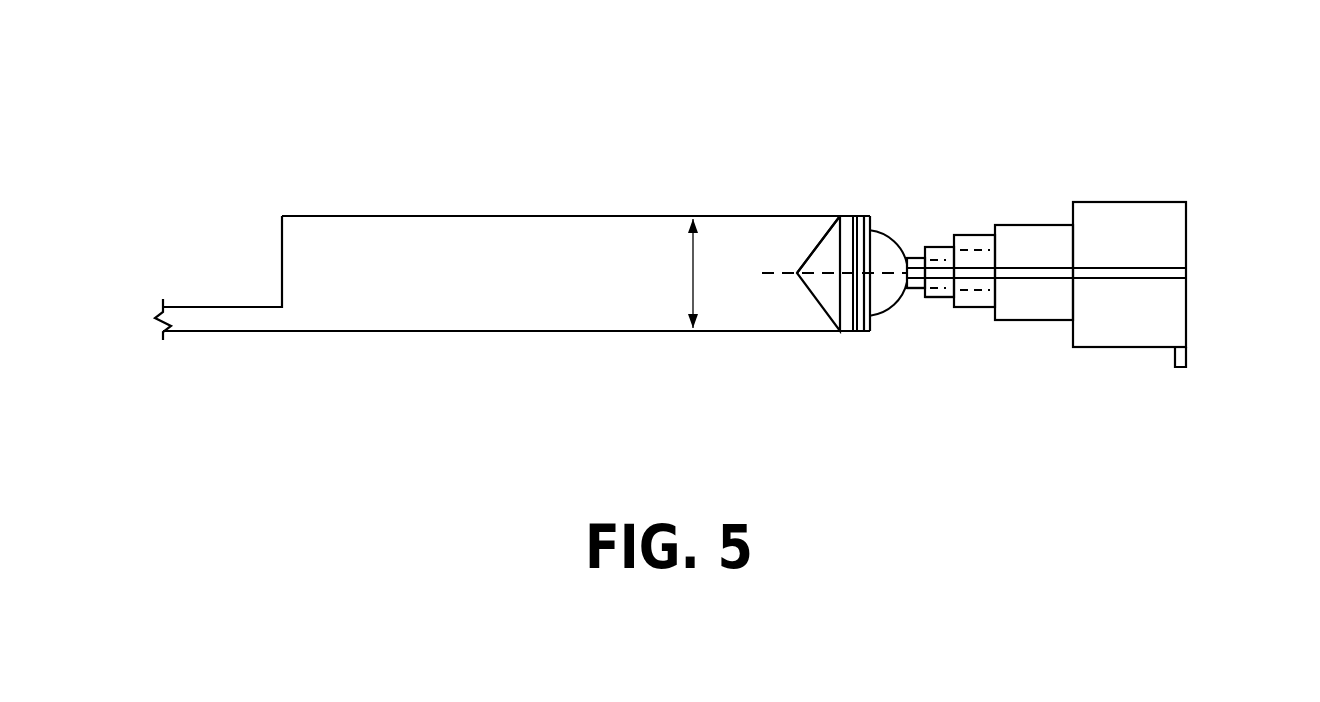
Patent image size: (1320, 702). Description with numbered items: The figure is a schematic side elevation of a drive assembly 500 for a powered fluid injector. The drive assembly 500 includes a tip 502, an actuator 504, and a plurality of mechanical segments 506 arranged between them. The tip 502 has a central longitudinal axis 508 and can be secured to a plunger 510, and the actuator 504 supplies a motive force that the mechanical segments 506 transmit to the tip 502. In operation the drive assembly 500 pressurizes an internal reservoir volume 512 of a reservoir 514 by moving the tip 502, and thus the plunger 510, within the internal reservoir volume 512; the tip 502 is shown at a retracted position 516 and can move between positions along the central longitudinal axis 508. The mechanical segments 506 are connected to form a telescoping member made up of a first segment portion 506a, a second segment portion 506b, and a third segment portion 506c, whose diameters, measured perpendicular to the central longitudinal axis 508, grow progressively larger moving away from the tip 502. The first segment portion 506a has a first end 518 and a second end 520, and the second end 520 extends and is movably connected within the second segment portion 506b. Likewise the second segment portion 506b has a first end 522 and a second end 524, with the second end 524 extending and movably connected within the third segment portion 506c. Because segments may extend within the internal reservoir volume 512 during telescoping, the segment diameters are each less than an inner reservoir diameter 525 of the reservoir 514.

The drive assembly 500 is at (1102, 173).
The tip 502 is at (865, 228).
The actuator 504 is at (1173, 275).
The plurality of mechanical segments 506 is at (1035, 223).
The first segment portion 506a is at (915, 288).
The second segment portion 506b is at (938, 297).
The third segment portion 506c is at (968, 307).
The central longitudinal axis 508 is at (783, 277).
The plunger 510 is at (841, 232).
The internal reservoir volume 512 is at (507, 285).
The reservoir 514 is at (612, 215).
The retracted position 516 is at (815, 231).
The first end 518 is at (910, 258).
The second end 520 is at (950, 247).
The first end 522 is at (932, 247).
The second end 524 is at (982, 235).
The inner reservoir diameter 525 is at (693, 265).